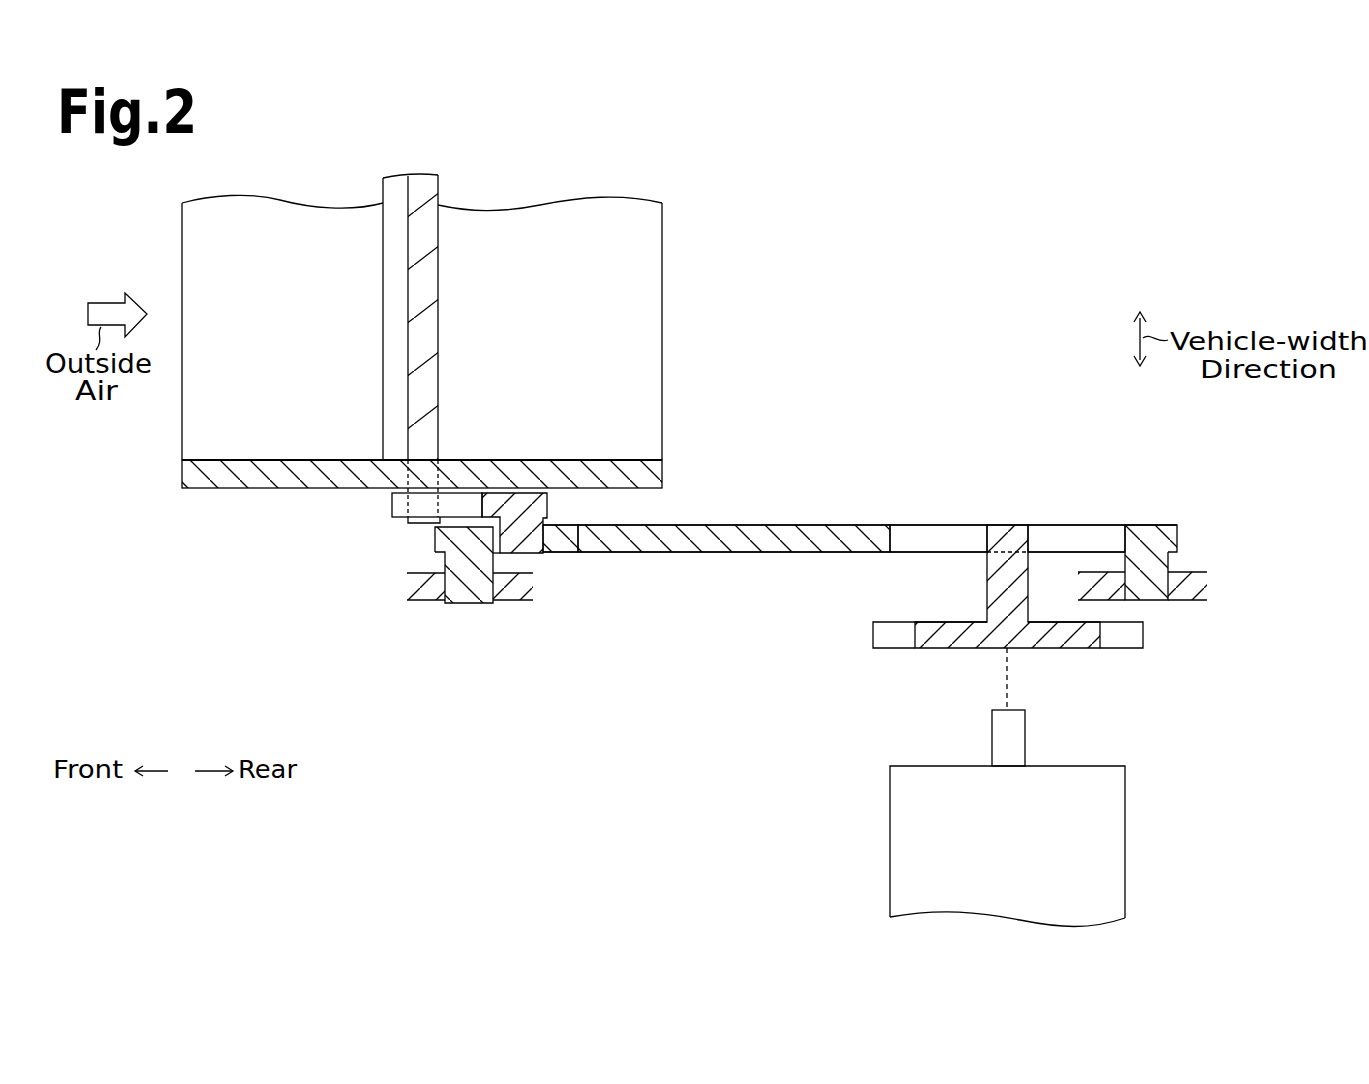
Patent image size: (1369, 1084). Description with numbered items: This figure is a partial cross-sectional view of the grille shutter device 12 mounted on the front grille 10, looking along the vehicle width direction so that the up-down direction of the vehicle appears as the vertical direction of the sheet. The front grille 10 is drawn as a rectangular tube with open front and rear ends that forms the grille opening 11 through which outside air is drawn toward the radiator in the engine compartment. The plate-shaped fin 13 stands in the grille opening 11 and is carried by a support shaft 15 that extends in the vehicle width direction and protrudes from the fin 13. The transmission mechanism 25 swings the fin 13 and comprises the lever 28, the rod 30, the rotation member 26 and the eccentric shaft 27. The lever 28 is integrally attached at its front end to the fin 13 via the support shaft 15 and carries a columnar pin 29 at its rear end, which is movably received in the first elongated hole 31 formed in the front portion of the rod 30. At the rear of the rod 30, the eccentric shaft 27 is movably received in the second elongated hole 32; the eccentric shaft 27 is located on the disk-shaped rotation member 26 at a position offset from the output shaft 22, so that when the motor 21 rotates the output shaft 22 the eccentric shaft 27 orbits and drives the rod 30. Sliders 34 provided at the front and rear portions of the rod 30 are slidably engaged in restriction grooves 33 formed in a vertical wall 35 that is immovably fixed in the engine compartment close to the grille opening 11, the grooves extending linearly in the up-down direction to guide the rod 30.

The front grille 10 is at (236, 489).
The grille opening 11 is at (192, 462).
The grille shutter device 12 is at (860, 538).
The fin 13 is at (410, 282).
The support shaft 15 is at (423, 526).
The motor 21 is at (897, 822).
The output shaft 22 is at (995, 735).
The transmission mechanism 25 is at (860, 536).
The rotation member 26 is at (1140, 633).
The eccentric shaft 27 is at (992, 580).
The lever 28 is at (392, 503).
The pin 29 is at (530, 555).
The rod 30 is at (735, 553).
The first elongated hole 31 is at (580, 555).
The second elongated hole 32 is at (890, 553).
The restriction groove 33 is at (455, 605).
The slider 34 is at (478, 600).
The vertical wall 35 is at (412, 587).